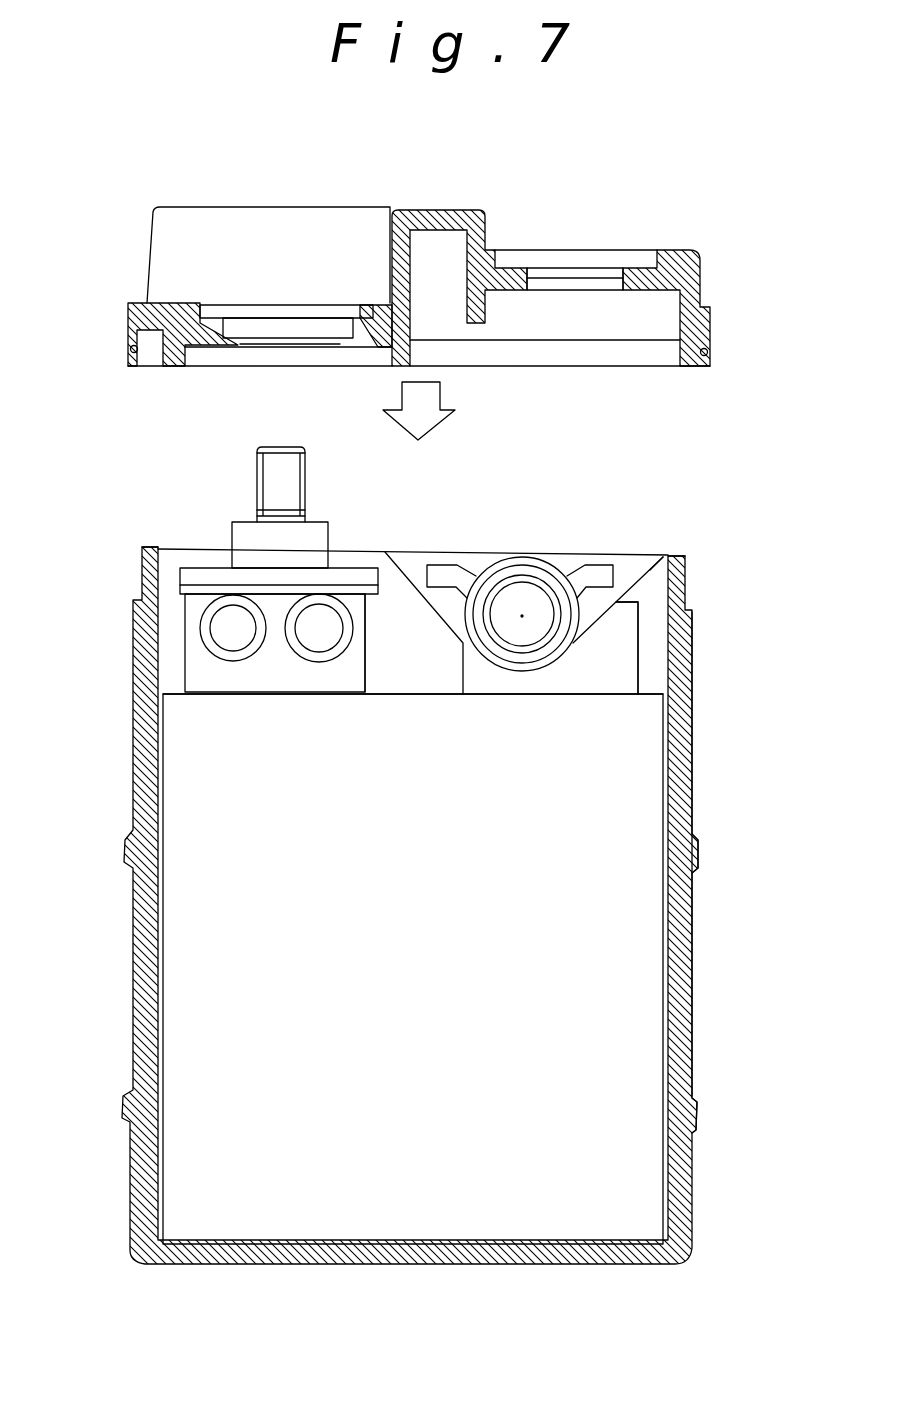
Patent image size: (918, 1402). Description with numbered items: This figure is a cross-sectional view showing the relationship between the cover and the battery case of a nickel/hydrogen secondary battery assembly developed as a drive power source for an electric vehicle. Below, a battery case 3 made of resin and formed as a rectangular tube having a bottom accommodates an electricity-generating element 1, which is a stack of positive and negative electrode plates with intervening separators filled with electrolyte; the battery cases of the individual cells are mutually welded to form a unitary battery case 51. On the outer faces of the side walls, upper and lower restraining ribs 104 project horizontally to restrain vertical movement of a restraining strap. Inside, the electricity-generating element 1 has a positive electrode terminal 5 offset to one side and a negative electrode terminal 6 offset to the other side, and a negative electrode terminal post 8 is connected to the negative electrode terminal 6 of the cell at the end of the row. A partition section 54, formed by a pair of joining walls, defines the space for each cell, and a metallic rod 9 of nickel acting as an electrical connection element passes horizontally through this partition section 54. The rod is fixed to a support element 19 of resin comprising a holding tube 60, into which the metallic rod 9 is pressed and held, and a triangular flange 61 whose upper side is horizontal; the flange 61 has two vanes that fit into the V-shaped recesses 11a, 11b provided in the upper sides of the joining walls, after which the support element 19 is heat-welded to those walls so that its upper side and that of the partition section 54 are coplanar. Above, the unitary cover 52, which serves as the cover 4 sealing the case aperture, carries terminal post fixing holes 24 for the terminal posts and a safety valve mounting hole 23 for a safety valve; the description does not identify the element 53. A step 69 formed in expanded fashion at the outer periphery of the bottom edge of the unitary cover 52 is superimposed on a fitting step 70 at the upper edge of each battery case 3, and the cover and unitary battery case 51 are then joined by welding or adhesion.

The electricity-generating element 1 is at (189, 807).
The battery case 3 is at (696, 792).
The cover 4 is at (437, 209).
The positive electrode terminal 5 is at (627, 622).
The negative electrode terminal 6 is at (190, 660).
The negative electrode terminal post 8 is at (265, 478).
The metallic rod 9 is at (531, 598).
The recess 11a is at (638, 586).
The recess 11b is at (715, 520).
The support element 19 is at (599, 556).
The safety valve mounting hole 23 is at (547, 291).
The terminal post fixing hole 24 is at (328, 352).
The unitary battery case 51 is at (118, 1163).
The unitary cover 52 is at (145, 267).
The recess wall 53 is at (608, 348).
The partition section 54 is at (381, 666).
The holding tube 60 is at (464, 616).
The triangular flange 61 is at (408, 573).
The step 69 is at (131, 349).
The fitting step 70 is at (142, 562).
The restraining rib 104 is at (699, 862).